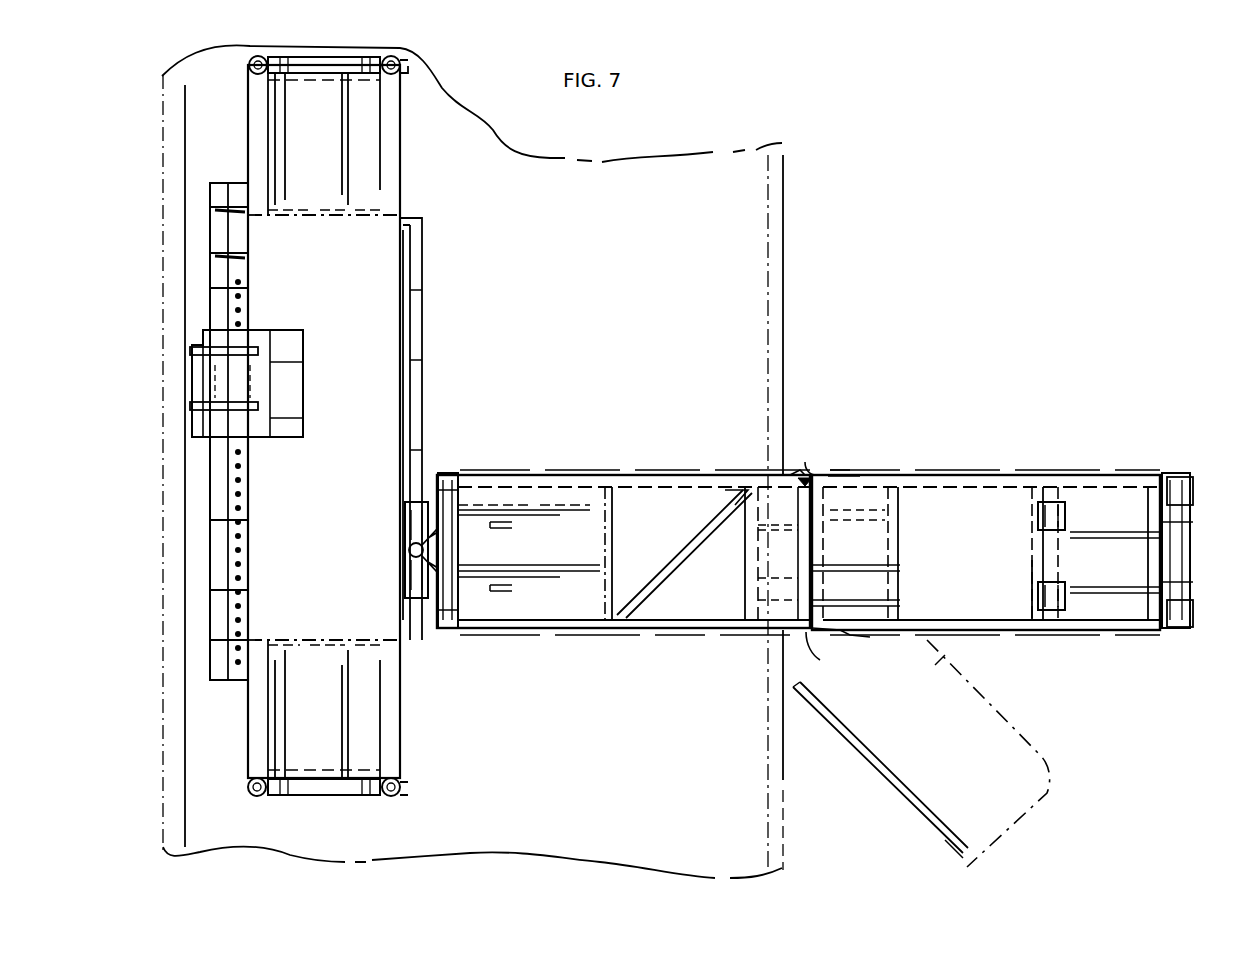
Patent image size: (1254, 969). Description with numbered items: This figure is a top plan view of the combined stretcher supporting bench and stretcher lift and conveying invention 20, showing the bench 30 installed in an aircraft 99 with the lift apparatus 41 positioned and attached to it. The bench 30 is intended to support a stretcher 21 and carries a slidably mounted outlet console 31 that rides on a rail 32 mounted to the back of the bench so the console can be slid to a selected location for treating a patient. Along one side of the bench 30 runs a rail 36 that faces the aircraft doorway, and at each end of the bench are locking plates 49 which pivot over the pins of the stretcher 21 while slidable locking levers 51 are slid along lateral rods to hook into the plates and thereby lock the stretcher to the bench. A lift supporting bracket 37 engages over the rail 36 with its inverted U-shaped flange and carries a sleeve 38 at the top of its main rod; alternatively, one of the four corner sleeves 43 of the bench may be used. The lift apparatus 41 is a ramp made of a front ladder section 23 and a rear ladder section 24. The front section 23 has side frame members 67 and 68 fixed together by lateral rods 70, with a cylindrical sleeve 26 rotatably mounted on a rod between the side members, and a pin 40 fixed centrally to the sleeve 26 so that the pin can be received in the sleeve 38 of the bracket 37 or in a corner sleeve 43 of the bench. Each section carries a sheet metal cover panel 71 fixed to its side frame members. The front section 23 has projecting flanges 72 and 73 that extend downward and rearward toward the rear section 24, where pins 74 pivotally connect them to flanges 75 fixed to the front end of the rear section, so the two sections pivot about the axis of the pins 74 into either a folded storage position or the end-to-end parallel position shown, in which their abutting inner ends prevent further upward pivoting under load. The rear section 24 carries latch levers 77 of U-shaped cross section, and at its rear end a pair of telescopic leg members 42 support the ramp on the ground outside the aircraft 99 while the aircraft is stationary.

The combined stretcher supporting bench and stretcher lift and conveying invention 20 is at (1100, 437).
The stretcher 21 is at (955, 475).
The front ladder section 23 is at (640, 630).
The rear ladder section 24 is at (1025, 638).
The cylindrical sleeve 26 is at (455, 500).
The bench 30 is at (415, 187).
The slidably mounted outlet console 31 is at (318, 380).
The rail 32 is at (228, 618).
The rail 36 is at (428, 370).
The lift supporting bracket 37 is at (395, 581).
The sleeve 38 is at (408, 540).
The pin 40 is at (408, 550).
The lift apparatus 41 is at (905, 485).
The telescopic leg member 42 is at (1193, 490).
The sleeve 43 is at (400, 792).
The locking plate 49 is at (335, 796).
The slidable locking lever 51 is at (335, 765).
The side frame member 67 is at (693, 632).
The side frame member 68 is at (690, 480).
The lateral rod 70 is at (615, 548).
The sheet metal cover panel 71 is at (590, 490).
The projecting flange 72 is at (815, 665).
The projecting flange 73 is at (785, 468).
The pin 74 is at (803, 453).
The flange 75 is at (833, 647).
The latch lever 77 is at (1066, 516).
The aircraft 99 is at (790, 332).